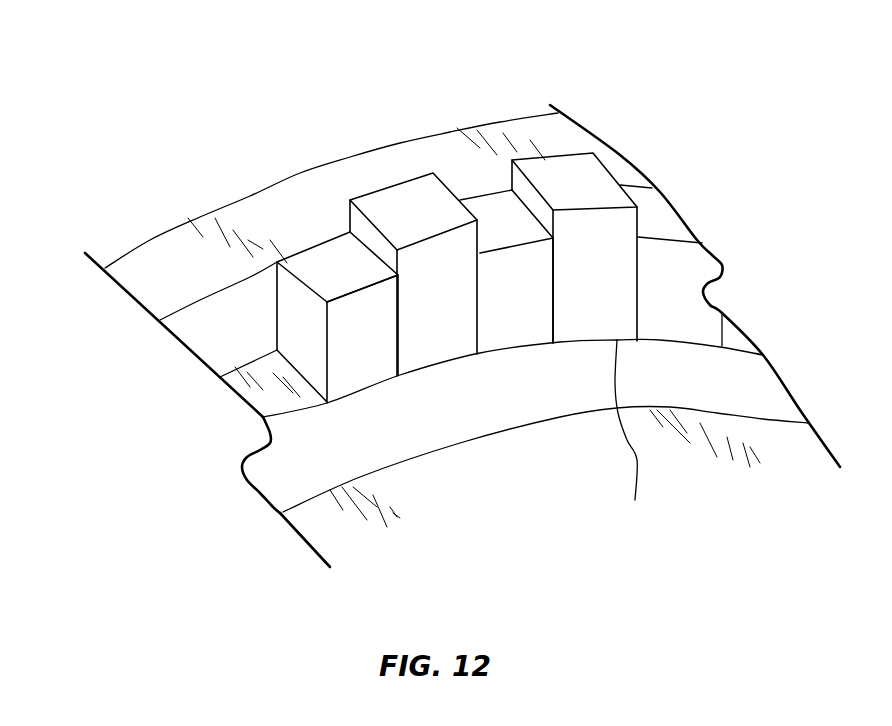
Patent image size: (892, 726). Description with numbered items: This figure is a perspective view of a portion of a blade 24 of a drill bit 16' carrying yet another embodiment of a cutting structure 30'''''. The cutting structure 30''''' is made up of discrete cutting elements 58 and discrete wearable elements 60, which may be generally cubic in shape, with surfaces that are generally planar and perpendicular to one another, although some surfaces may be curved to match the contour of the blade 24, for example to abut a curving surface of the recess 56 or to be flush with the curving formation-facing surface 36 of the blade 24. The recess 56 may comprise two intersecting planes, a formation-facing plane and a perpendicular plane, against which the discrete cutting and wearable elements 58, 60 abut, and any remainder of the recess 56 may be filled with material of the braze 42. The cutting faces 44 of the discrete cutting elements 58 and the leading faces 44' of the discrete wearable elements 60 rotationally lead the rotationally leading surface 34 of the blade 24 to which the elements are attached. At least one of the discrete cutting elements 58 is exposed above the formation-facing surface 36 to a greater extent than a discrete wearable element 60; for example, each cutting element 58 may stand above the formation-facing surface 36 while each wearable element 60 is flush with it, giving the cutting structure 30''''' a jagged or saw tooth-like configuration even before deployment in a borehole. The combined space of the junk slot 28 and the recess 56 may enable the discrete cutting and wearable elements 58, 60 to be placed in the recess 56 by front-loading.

The drill bit 16' is at (443, 316).
The blade 24 is at (148, 285).
The junk slot 28 is at (293, 477).
The cutting structure 30''''' is at (489, 218).
The rotationally leading surface 34 is at (420, 431).
The formation-facing surface 36 is at (203, 276).
The braze 42 is at (631, 435).
The cutting faces 44 is at (493, 217).
The leading faces 44' is at (489, 240).
The recess 56 is at (240, 392).
The discrete cutting elements 58 is at (410, 210).
The discrete wearable elements 60 is at (337, 260).